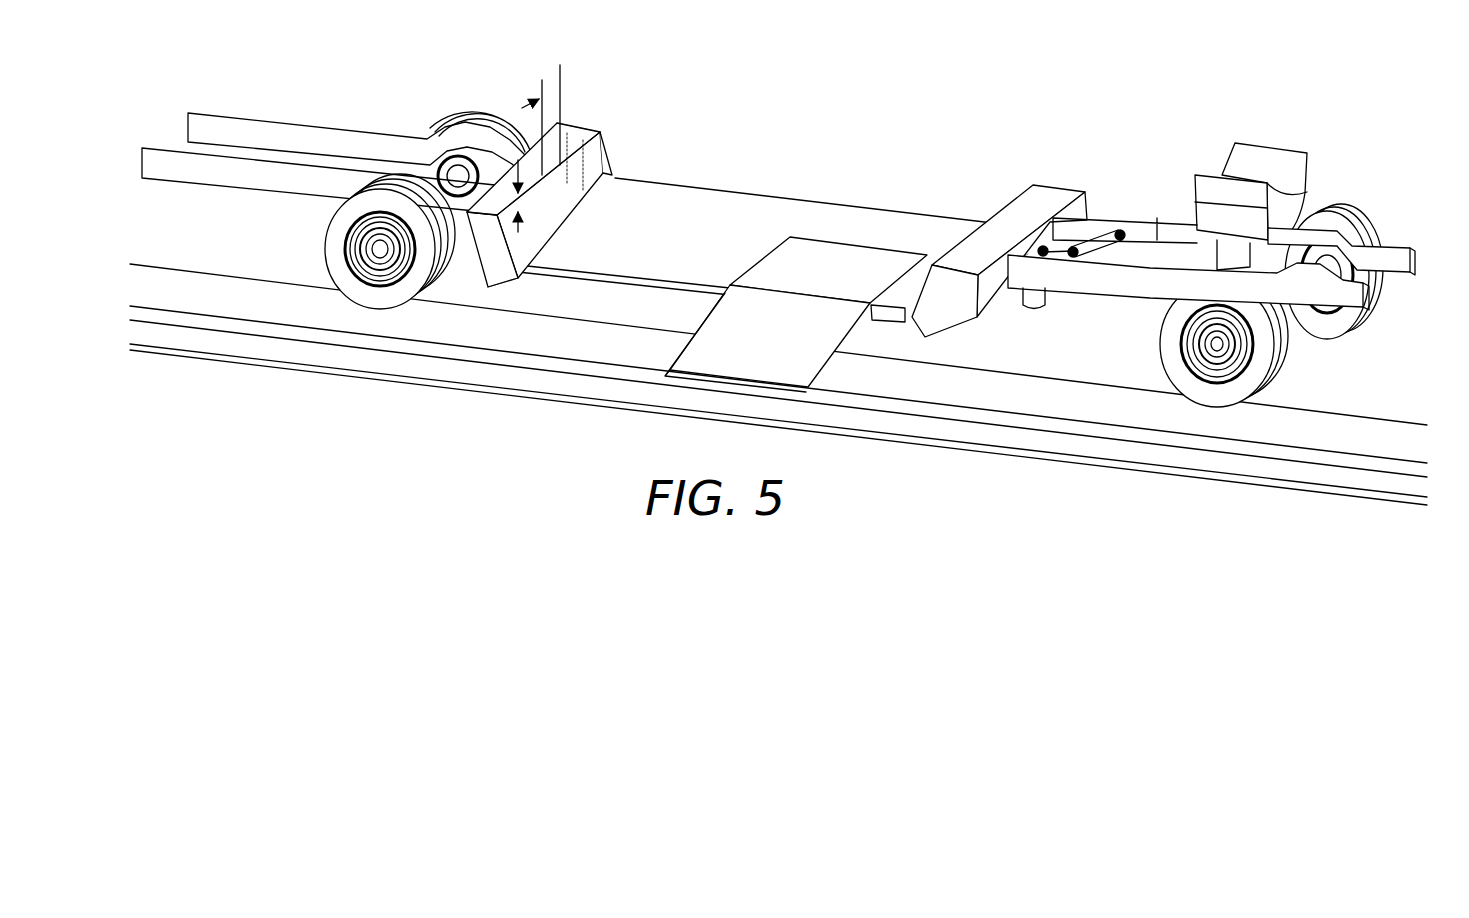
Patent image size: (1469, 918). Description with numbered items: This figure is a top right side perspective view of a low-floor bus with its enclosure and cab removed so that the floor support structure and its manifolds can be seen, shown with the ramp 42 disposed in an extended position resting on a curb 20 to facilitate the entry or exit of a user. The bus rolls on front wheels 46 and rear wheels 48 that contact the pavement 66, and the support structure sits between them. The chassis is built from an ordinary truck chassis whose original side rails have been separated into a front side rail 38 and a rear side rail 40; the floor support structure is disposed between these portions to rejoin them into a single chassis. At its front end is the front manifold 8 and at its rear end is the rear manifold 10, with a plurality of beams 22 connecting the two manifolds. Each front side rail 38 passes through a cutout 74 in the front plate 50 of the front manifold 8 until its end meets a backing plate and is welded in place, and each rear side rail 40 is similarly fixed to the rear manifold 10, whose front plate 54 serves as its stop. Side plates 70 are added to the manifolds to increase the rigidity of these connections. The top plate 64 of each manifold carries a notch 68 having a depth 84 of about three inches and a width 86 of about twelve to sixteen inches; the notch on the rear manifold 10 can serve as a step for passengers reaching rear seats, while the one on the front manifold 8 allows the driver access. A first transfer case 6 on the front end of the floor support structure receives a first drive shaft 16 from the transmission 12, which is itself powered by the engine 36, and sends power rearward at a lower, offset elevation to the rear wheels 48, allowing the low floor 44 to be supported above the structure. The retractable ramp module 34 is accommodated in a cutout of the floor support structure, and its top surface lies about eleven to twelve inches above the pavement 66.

The first transfer case 6 is at (1043, 307).
The front manifold 8 is at (1013, 230).
The rear manifold 10 is at (622, 150).
The transmission 12 is at (1211, 257).
The first drive shaft 16 is at (1110, 228).
The curb 20 is at (1380, 462).
The beam 22 is at (620, 278).
The retractable ramp module 34 is at (862, 250).
The engine 36 is at (1262, 155).
The front side rail 38 is at (1155, 228).
The rear side rail 40 is at (283, 124).
The ramp 42 is at (702, 337).
The floor 44 is at (696, 188).
The front wheel 46 is at (1335, 322).
The rear wheel 48 is at (465, 107).
The front plate of front manifold 50 is at (1082, 205).
The front plate of rear manifold 54 is at (600, 162).
The top plate of front manifold or rear manifold 64 is at (761, 222).
The pavement 66 is at (1333, 428).
The notch 68 is at (590, 152).
The side plate of front manifold or rear manifold 70 is at (500, 283).
The cutout 74 is at (1023, 257).
The depth of notch 84 is at (522, 232).
The width of notch 86 is at (562, 78).